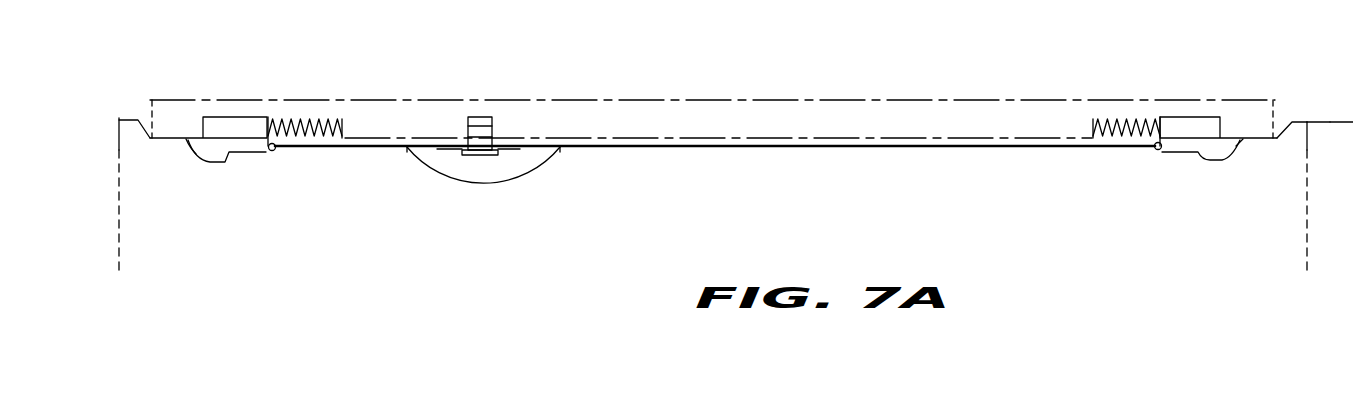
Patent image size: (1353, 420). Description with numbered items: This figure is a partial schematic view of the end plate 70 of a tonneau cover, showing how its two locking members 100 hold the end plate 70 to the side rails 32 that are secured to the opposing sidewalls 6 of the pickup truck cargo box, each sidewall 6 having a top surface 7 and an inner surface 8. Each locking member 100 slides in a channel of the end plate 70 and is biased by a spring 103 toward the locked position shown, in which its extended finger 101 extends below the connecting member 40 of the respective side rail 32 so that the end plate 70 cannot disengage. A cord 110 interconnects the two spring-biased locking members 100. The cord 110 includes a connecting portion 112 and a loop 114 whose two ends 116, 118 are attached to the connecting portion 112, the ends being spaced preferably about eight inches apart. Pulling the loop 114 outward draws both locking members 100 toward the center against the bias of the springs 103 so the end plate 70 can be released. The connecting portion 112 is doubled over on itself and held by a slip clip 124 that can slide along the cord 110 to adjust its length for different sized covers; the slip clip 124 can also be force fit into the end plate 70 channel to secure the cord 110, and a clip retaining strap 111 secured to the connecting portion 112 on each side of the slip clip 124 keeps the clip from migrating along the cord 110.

The sidewall 6 is at (1342, 230).
The top surface 7 is at (1333, 122).
The inner surface 8 is at (120, 245).
The side rail 32 is at (133, 100).
The connecting member 40 is at (168, 138).
The end plate 70 is at (376, 92).
The locking member 100 is at (253, 152).
The extended finger 101 is at (190, 152).
The spring 103 is at (303, 124).
The cord 110 is at (760, 150).
The clip retaining strap 111 is at (485, 157).
The connecting portion 112 is at (855, 150).
The loop 114 is at (481, 184).
The end of loop 116 is at (557, 150).
The end of loop 118 is at (402, 152).
The slip clip 124 is at (488, 117).